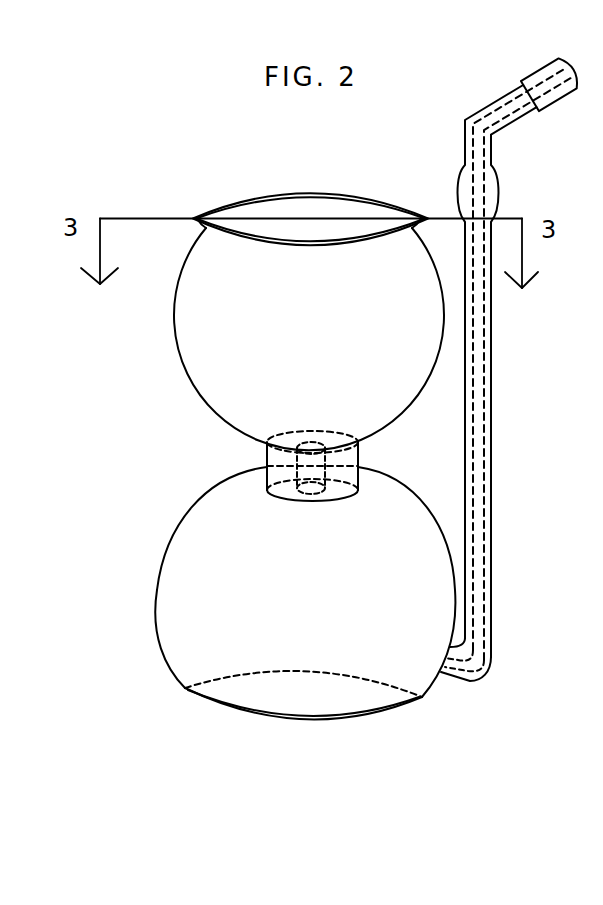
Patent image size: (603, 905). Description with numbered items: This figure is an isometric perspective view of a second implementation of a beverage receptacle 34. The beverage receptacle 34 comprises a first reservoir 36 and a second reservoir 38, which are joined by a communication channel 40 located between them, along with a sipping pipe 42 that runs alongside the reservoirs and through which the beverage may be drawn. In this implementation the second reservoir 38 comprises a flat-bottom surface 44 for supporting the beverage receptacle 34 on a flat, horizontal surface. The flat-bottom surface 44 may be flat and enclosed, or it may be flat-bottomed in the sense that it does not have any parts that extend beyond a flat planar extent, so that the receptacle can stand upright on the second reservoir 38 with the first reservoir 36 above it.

The beverage receptacle 34 is at (344, 147).
The first reservoir 36 is at (225, 363).
The second reservoir 38 is at (212, 594).
The communication channel 40 is at (270, 465).
The sipping pipe 42 is at (478, 400).
The flat-bottom surface 44 is at (326, 709).